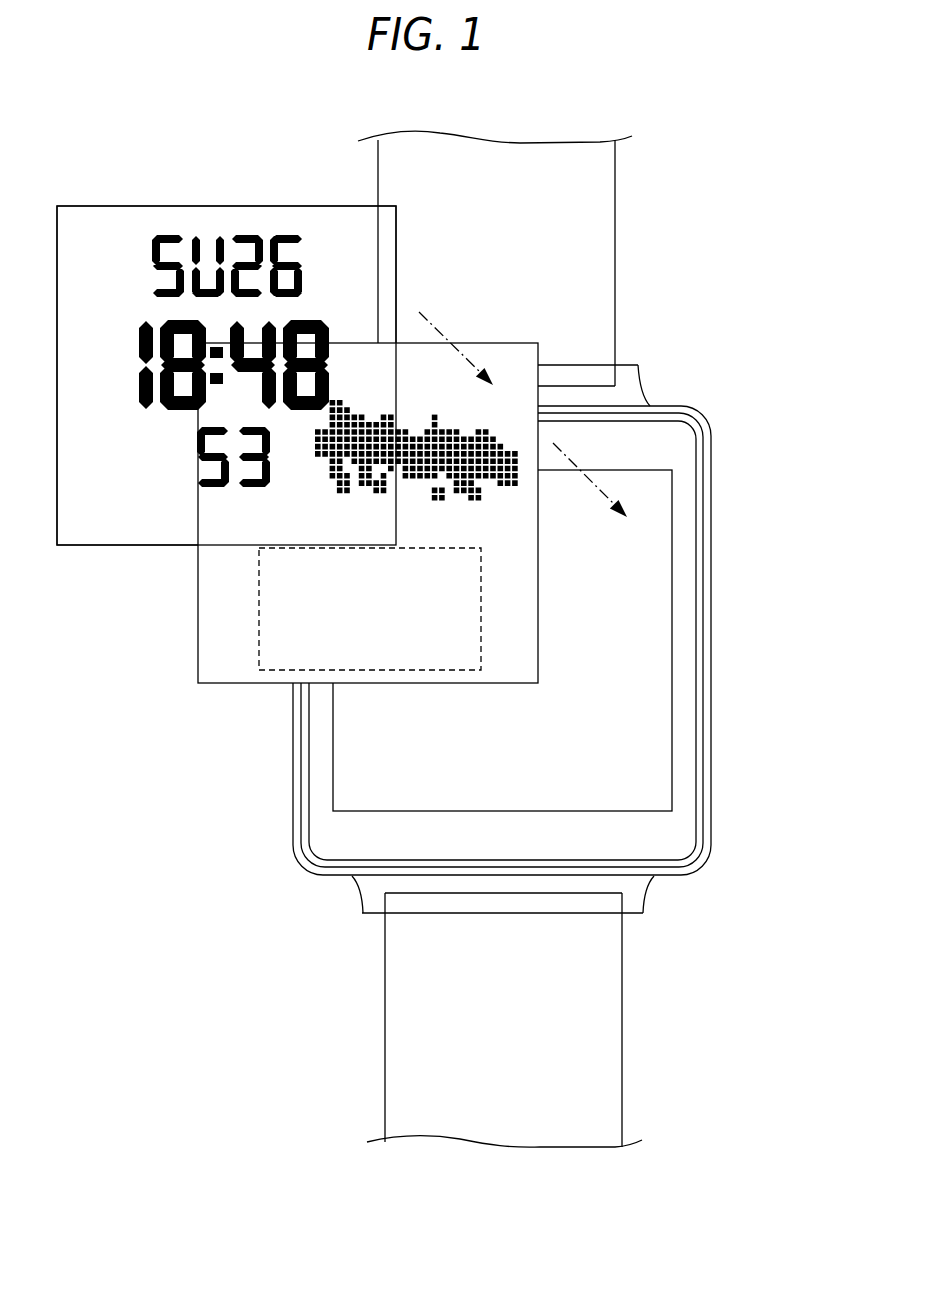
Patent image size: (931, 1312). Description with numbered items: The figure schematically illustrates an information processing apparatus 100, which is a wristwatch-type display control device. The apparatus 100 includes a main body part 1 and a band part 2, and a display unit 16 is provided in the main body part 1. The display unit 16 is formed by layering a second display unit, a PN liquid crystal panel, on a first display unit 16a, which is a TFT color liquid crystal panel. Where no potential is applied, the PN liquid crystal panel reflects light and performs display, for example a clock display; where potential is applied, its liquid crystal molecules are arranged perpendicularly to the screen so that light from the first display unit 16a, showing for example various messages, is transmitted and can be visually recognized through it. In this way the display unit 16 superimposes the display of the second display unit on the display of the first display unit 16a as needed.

The information processing apparatus 100 is at (411, 625).
The main body part 1 is at (703, 415).
The band part 2 is at (607, 300).
The display unit 16 is at (288, 444).
The first display unit 16a is at (207, 668).